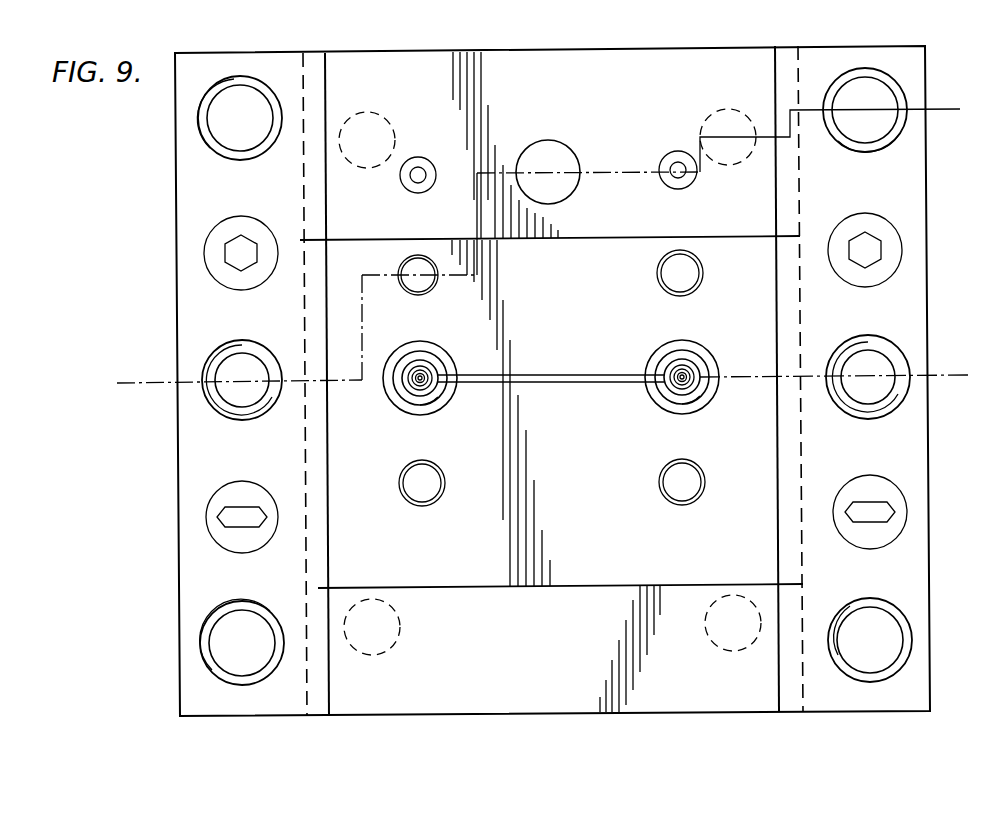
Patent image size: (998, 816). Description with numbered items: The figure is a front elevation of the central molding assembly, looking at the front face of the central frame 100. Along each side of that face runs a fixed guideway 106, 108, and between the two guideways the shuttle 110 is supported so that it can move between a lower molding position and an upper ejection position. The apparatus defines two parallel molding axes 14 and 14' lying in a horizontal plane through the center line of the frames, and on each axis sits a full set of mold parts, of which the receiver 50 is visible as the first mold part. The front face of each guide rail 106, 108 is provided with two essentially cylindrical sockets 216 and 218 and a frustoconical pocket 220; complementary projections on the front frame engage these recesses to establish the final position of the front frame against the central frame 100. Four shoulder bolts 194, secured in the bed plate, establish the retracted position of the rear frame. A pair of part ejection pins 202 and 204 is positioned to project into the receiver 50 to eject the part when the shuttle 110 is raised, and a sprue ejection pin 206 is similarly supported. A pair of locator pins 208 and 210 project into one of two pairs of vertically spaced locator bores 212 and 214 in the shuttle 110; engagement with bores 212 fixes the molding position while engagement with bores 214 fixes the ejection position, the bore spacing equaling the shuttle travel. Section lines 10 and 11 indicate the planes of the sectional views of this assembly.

The central frame 100 is at (220, 726).
The fixed guideway 106 is at (230, 196).
The fixed guideway 108 is at (840, 316).
The shuttle 110 is at (563, 326).
The cylindrical socket 216 is at (222, 100).
The cylindrical socket 218 is at (262, 625).
The frustoconical pocket 220 is at (243, 410).
The shoulder bolt 194 is at (395, 132).
The part ejection pin 202 is at (405, 192).
The part ejection pin 204 is at (676, 190).
The sprue ejection pin 206 is at (560, 148).
The locator pin 208 is at (433, 288).
The locator pin 210 is at (678, 292).
The locator bore 212 is at (405, 290).
The locator bore 214 is at (435, 498).
The molding axis 14 is at (699, 365).
The molding axis 14' is at (431, 367).
The receiver 50 is at (432, 404).
The terminal 10 is at (616, 365).
The section line 11 is at (158, 365).